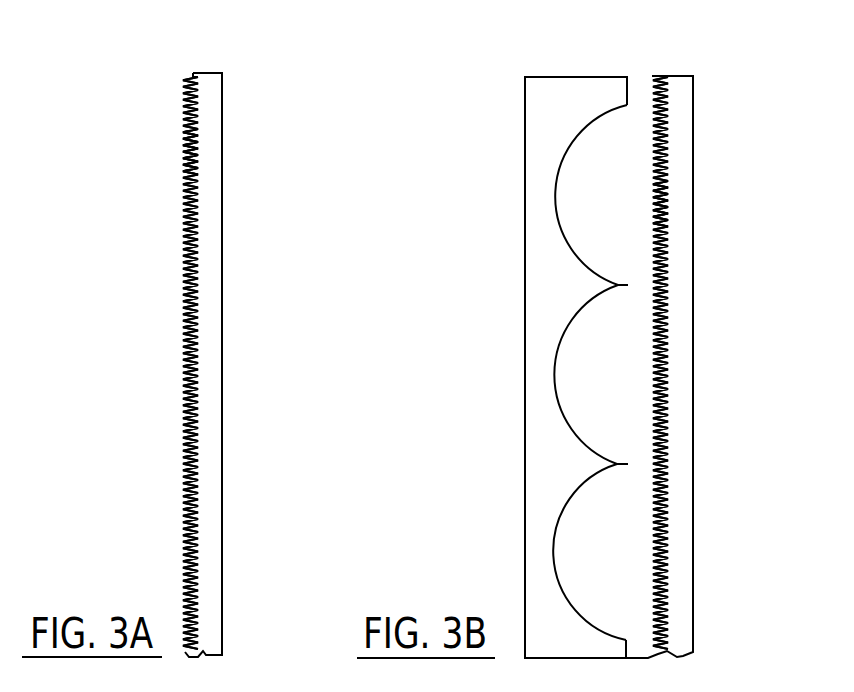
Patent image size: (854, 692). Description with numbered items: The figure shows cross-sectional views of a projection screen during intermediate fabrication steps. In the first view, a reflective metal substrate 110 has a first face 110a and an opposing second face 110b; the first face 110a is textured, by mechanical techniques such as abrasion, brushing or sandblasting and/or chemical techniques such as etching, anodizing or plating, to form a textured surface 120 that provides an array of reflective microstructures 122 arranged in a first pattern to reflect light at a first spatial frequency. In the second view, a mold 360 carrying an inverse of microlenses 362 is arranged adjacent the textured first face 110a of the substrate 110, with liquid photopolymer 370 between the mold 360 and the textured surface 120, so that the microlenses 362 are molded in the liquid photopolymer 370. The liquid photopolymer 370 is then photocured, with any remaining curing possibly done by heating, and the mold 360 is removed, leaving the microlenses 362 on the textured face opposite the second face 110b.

In FIG. 3A, the substrate 110 is at (208, 365).
In FIG. 3B, the substrate 110 is at (678, 341).
In FIG. 3A, the first face 110a is at (183, 303).
In FIG. 3B, the first face 110a is at (655, 330).
In FIG. 3A, the second face 110b is at (222, 278).
In FIG. 3B, the second face 110b is at (693, 300).
In FIG. 3A, the textured surface 120 is at (185, 205).
In FIG. 3B, the textured surface 120 is at (654, 142).
In FIG. 3A, the reflective microstructures 122 is at (183, 168).
In FIG. 3B, the reflective microstructures 122 is at (654, 222).
In FIG. 3B, the mold 360 is at (541, 367).
In FIG. 3B, the microlenses 362 is at (576, 133).
In FIG. 3B, the liquid photopolymer 370 is at (628, 384).